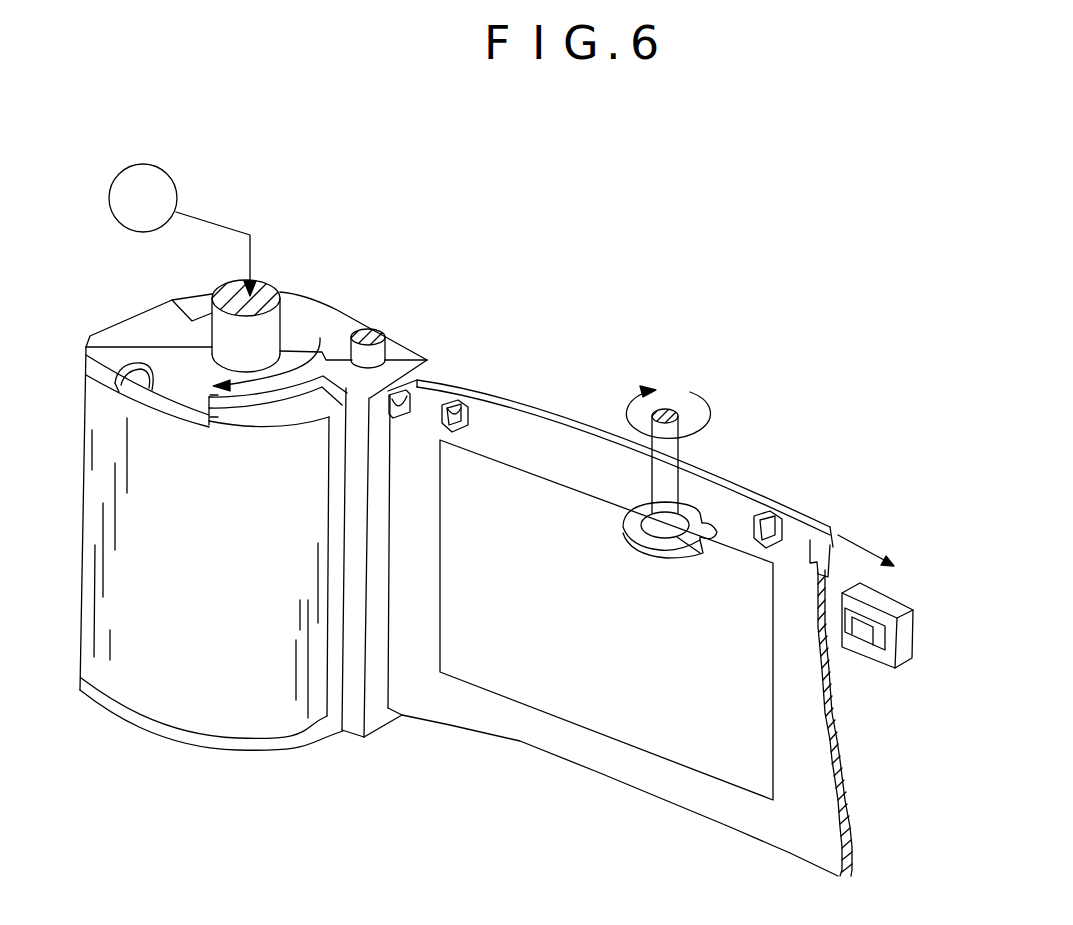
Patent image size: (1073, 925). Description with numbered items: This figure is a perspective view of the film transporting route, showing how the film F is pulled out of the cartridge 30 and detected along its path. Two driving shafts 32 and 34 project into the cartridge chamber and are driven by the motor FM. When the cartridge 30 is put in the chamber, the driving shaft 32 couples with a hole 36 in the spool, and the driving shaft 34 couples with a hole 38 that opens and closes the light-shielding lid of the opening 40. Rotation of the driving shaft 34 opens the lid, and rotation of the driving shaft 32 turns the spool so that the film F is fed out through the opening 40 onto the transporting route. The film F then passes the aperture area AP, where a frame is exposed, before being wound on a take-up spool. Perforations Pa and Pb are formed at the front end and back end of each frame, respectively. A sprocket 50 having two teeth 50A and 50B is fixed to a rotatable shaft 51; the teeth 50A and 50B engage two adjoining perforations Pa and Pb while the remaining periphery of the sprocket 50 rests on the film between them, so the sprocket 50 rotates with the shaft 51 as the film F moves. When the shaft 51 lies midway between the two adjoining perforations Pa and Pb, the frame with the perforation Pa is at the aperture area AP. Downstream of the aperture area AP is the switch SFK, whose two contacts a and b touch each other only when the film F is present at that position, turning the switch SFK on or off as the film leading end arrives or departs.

The cartridge 30 is at (160, 672).
The driving shaft 32 is at (212, 347).
The driving shaft 34 is at (353, 338).
The hole in spool 36 is at (211, 360).
The hole for opening and closing light-shielding lid 38 is at (368, 360).
The opening 40 is at (388, 583).
The motor FM is at (177, 197).
The film F is at (602, 757).
The aperture area AP is at (715, 780).
The perforation Pa is at (410, 403).
The perforation Pb is at (468, 403).
The sprocket 50 is at (627, 523).
The tooth 50A is at (717, 528).
The tooth 50B is at (697, 553).
The rotatable shaft 51 is at (666, 407).
The switch SFK is at (917, 627).
The contact a is at (870, 640).
The contact b is at (873, 623).